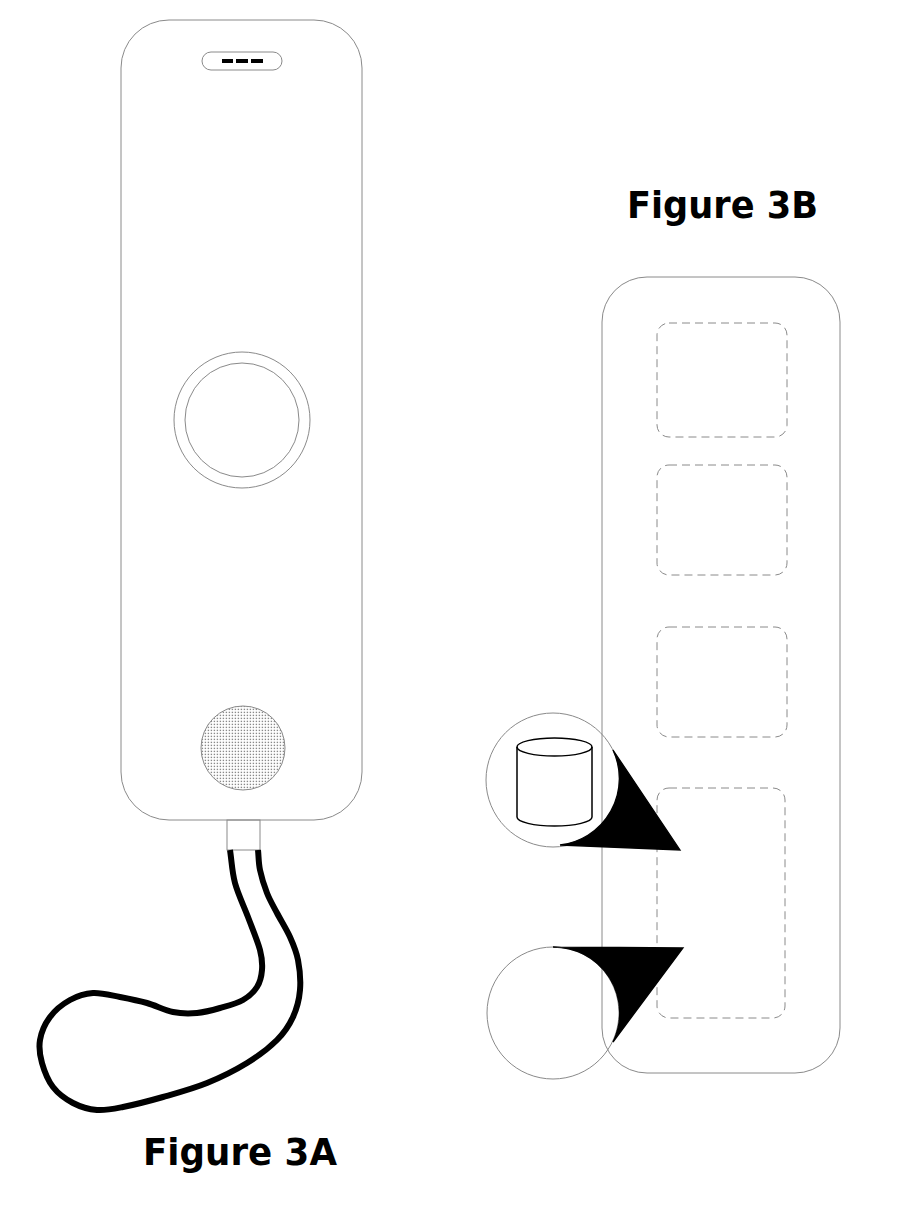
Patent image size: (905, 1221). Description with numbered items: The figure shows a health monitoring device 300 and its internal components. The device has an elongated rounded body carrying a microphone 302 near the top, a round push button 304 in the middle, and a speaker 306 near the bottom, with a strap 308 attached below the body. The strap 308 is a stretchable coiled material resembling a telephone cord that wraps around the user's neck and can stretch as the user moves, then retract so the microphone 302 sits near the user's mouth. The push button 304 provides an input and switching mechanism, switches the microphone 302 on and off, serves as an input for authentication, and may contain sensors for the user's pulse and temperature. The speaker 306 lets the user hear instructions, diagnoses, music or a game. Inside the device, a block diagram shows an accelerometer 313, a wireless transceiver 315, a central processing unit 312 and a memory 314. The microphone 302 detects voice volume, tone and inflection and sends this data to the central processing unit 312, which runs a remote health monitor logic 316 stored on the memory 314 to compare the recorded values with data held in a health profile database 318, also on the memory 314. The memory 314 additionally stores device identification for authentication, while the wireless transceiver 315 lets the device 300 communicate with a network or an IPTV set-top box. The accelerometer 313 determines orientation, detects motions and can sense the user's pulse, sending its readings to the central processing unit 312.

In FIG. 3A, the health monitoring device 300 is at (305, 435).
In FIG. 3A, the microphone 302 is at (272, 94).
In FIG. 3A, the push button 304 is at (261, 390).
In FIG. 3A, the speaker 306 is at (277, 716).
In FIG. 3A, the strap 308 is at (169, 980).
In FIG. 3B, the central processing unit 312 is at (658, 659).
In FIG. 3B, the accelerometer 313 is at (658, 354).
In FIG. 3B, the memory 314 is at (658, 903).
In FIG. 3B, the wireless transceiver 315 is at (658, 497).
In FIG. 3B, the remote health monitor logic 316 is at (536, 1013).
In FIG. 3B, the health profile database 318 is at (549, 762).